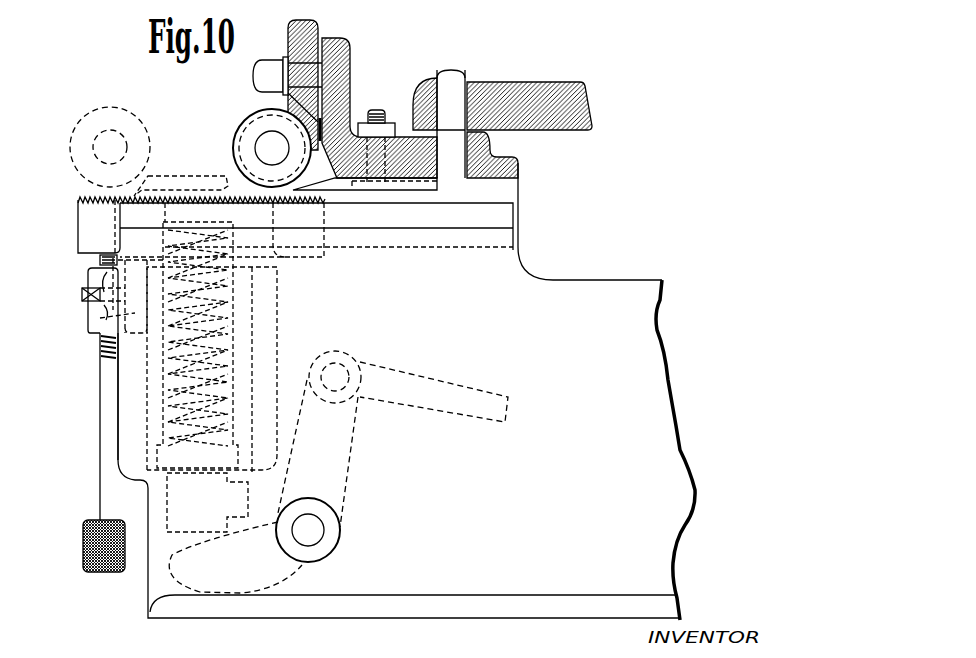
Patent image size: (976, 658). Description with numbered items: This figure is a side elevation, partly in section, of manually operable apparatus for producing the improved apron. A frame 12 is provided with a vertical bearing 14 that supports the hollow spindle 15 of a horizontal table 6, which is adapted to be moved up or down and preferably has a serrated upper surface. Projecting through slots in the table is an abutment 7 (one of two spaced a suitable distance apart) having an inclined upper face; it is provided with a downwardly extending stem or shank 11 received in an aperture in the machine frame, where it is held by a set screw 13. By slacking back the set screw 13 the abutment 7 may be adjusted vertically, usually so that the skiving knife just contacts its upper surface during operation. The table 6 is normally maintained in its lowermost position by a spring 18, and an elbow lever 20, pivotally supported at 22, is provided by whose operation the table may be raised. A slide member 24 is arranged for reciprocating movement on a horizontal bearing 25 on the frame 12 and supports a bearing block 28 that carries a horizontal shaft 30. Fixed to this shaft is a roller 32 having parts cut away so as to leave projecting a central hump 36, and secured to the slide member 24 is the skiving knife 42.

The horizontal table 6 is at (323, 203).
The abutment 7 is at (160, 196).
The stem or shank 11 is at (133, 313).
The frame 12 is at (477, 572).
The set screw 13 is at (82, 293).
The vertical bearing 14 is at (133, 424).
The hollow spindle 15 is at (147, 385).
The spring 18 is at (167, 423).
The elbow lever 20 is at (333, 477).
The pivot 22 is at (312, 532).
The slide member 24 is at (502, 167).
The horizontal bearing 25 is at (498, 212).
The bearing block 28 is at (318, 85).
The horizontal shaft 30 is at (265, 150).
The roller 32 is at (242, 140).
The central hump 36 is at (273, 110).
The skiving knife 42 is at (333, 190).